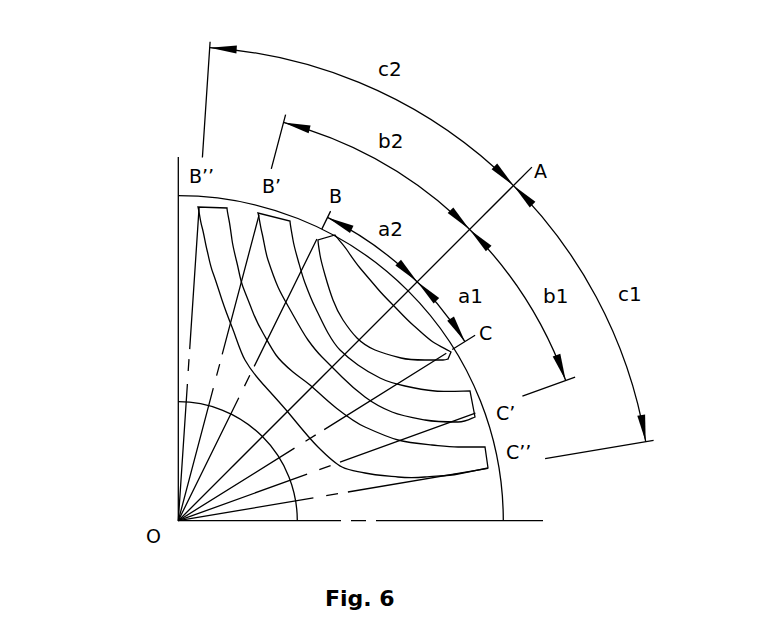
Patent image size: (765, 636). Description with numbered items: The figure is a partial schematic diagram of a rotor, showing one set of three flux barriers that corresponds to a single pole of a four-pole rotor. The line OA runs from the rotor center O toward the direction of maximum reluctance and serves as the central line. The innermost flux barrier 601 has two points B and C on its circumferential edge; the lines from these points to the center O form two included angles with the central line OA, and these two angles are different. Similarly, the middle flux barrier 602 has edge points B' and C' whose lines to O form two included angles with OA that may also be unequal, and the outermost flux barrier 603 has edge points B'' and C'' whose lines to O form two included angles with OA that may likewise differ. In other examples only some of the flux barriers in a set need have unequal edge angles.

The flux barrier 601 is at (346, 287).
The flux barrier 602 is at (279, 257).
The flux barrier 603 is at (212, 235).